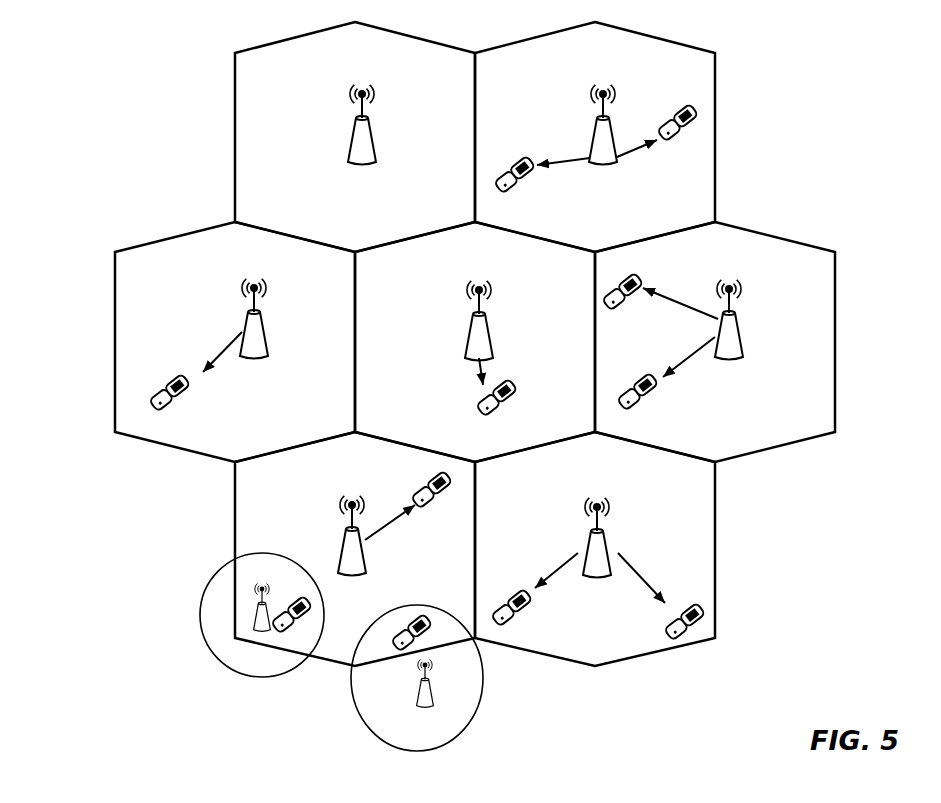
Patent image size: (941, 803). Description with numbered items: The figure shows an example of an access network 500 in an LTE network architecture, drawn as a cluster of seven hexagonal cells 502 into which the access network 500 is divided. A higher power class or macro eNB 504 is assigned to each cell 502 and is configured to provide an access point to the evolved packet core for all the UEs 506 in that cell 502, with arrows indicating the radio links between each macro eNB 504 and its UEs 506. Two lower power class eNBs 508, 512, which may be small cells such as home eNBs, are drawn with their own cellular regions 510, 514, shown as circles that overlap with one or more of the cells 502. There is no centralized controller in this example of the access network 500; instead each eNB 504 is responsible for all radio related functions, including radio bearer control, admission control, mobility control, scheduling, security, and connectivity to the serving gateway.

The access network 500 is at (835, 53).
The cell 502 is at (235, 100).
The macro eNB 504 is at (358, 82).
The UE 506 is at (692, 112).
The lower power class eNB 508 is at (257, 577).
The cellular region 510 is at (212, 618).
The lower power class eNB 512 is at (437, 707).
The cellular region 514 is at (383, 692).